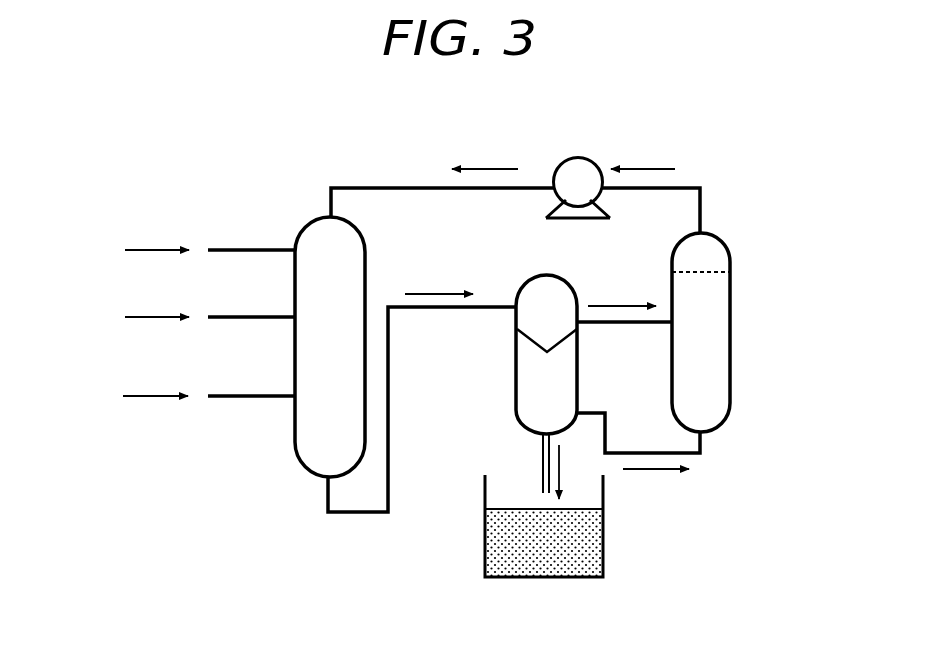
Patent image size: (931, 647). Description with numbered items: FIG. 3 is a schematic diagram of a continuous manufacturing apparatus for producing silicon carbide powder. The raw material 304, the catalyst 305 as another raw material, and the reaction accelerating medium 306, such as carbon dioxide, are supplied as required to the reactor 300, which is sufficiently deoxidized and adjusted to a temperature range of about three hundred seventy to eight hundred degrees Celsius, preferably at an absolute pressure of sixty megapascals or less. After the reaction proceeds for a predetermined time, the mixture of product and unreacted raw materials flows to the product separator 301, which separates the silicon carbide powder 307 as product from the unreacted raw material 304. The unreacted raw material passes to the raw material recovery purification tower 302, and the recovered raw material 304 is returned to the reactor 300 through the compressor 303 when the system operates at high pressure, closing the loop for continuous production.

The reactor 300 is at (298, 436).
The product separator 301 is at (522, 385).
The raw material recovery purification tower 302 is at (723, 300).
The compressor 303 is at (582, 168).
The supplied raw material 304 is at (493, 168).
The supplied catalyst 305 is at (143, 395).
The reaction accelerating medium 306 is at (143, 316).
The silicon carbide powder 307 is at (567, 570).